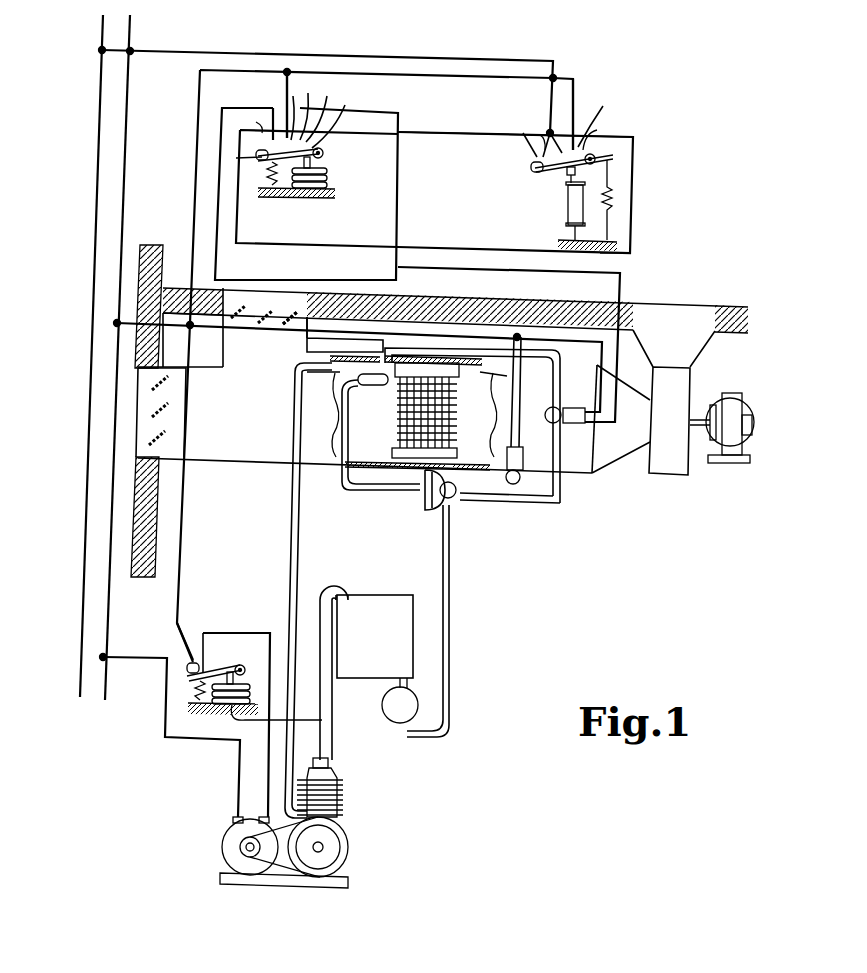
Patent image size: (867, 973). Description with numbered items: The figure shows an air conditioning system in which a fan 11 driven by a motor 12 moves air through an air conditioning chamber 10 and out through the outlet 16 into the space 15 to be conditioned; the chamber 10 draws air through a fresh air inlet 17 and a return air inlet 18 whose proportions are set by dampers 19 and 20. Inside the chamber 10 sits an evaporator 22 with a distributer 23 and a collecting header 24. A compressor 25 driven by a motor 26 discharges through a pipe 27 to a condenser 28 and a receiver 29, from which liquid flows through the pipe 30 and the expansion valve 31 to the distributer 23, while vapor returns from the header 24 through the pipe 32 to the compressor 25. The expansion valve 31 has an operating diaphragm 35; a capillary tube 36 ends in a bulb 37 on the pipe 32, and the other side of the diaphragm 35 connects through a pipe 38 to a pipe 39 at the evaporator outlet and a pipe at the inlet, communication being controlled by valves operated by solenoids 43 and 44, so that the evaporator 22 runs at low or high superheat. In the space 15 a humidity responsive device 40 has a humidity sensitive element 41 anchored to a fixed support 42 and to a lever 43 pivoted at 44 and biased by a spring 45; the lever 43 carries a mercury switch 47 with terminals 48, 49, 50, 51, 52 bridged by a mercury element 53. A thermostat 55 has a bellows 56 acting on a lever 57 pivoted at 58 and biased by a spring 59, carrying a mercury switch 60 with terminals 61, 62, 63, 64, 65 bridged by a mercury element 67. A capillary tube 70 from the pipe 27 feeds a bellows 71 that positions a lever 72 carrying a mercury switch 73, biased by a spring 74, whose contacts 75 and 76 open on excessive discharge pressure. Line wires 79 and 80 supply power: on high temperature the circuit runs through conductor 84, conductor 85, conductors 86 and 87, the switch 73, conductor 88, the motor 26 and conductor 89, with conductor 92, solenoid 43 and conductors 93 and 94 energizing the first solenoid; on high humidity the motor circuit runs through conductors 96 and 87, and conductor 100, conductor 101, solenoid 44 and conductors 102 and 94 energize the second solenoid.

The air conditioning chamber 10 is at (245, 460).
The fan 11 is at (670, 468).
The motor 12 is at (737, 408).
The space 15 is at (697, 186).
The outlet 16 is at (681, 315).
The fresh air inlet 17 is at (135, 432).
The return air inlet 18 is at (271, 305).
The damper 19 is at (163, 416).
The damper 20 is at (243, 330).
The evaporator 22 is at (397, 430).
The distributer 23 is at (458, 461).
The collecting header 24 is at (457, 373).
The compressor 25 is at (350, 854).
The motor 26 is at (240, 855).
The pipe 27 is at (331, 742).
The condenser 28 is at (364, 599).
The receiver 29 is at (390, 720).
The pipe 30 is at (450, 660).
The expansion valve 31 is at (450, 500).
The pipe 32 is at (294, 403).
The operating diaphragm 35 is at (425, 505).
The capillary tube 36 is at (383, 492).
The bulb 37 is at (372, 386).
The pipe 38 is at (490, 509).
The pipe 39 is at (564, 462).
The humidity responsive device 40 is at (519, 210).
The humidity sensitive element 41 is at (548, 413).
The fixed support 42 is at (506, 485).
The lever 43 is at (574, 408).
The pivot 44 is at (523, 462).
The spring 45 is at (615, 200).
The mercury switch 47 is at (596, 117).
The terminal 48 is at (522, 153).
The terminal 49 is at (534, 132).
The terminal 50 is at (557, 135).
The terminal 51 is at (583, 114).
The terminal 52 is at (600, 131).
The mercury element 53 is at (532, 170).
The thermostat 55 is at (348, 184).
The bellows 56 is at (322, 171).
The lever 57 is at (268, 176).
The pivot 58 is at (323, 151).
The spring 59 is at (258, 197).
The mercury switch 60 is at (334, 119).
The terminal 61 is at (251, 120).
The terminal 62 is at (273, 112).
The terminal 63 is at (294, 109).
The terminal 64 is at (310, 107).
The terminal 65 is at (322, 110).
The mercury element 67 is at (242, 158).
The capillary tube 70 is at (227, 720).
The bellows 71 is at (257, 665).
The lever 72 is at (184, 665).
The mercury switch 73 is at (230, 662).
The spring 74 is at (196, 696).
The contact 75 is at (196, 646).
The contact 76 is at (212, 630).
The line wire 79 is at (82, 587).
The line wire 80 is at (107, 600).
The conductor 84 is at (266, 56).
The conductor 85 is at (454, 133).
The conductor 86 is at (282, 86).
The conductor 87 is at (216, 160).
The conductor 88 is at (266, 748).
The conductor 89 is at (178, 740).
The conductor 92 is at (397, 218).
The conductor 93 is at (600, 355).
The conductor 94 is at (354, 340).
The conductor 96 is at (446, 88).
The conductor 100 is at (631, 251).
The conductor 101 is at (294, 286).
The conductor 102 is at (521, 401).